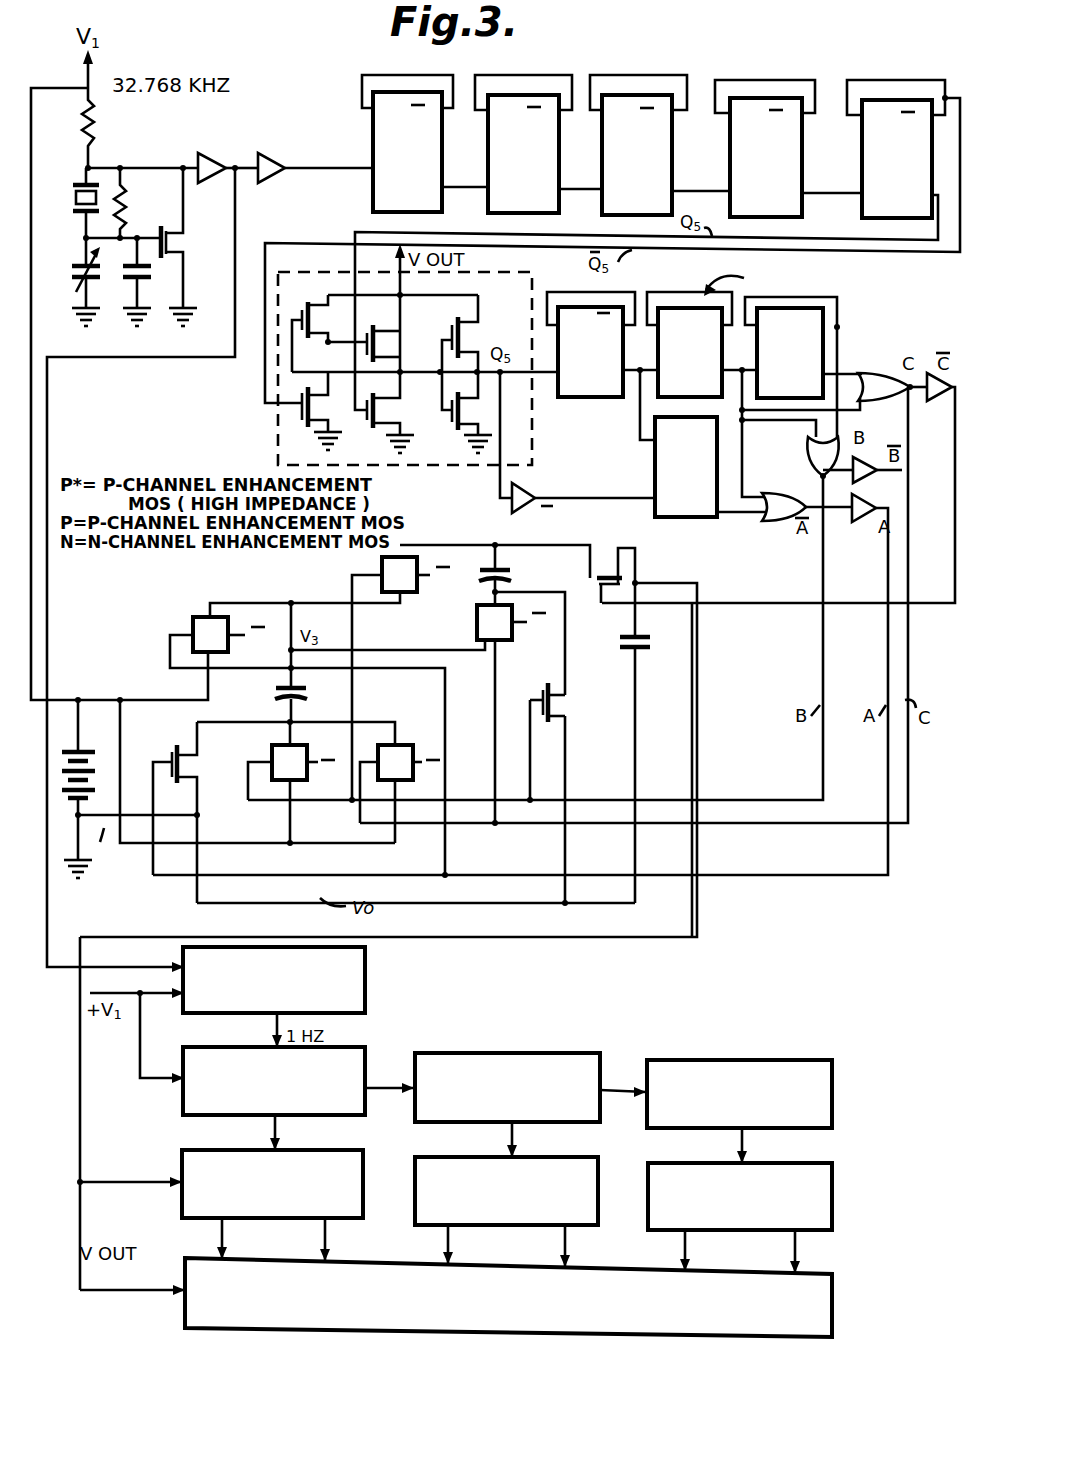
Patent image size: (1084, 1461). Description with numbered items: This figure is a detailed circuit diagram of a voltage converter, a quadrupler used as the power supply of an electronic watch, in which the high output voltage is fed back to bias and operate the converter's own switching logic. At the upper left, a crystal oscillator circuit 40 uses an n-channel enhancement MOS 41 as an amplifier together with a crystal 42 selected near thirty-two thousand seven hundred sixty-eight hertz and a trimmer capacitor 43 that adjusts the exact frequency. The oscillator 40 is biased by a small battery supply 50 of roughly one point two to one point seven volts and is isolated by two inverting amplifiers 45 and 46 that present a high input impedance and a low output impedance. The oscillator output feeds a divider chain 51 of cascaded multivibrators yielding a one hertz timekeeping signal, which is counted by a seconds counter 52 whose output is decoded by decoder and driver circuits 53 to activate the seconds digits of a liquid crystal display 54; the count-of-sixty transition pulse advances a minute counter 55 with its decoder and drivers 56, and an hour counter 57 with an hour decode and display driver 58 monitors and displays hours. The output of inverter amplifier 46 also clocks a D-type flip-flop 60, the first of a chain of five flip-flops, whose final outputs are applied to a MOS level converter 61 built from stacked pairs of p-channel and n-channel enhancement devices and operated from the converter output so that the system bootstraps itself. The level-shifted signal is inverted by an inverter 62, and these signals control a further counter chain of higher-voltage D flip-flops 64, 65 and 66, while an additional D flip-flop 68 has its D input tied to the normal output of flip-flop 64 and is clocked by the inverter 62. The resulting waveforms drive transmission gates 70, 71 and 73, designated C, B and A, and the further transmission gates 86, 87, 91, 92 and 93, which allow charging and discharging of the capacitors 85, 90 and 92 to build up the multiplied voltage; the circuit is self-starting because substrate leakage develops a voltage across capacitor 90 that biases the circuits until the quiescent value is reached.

The crystal oscillator circuit 40 is at (169, 150).
The n-channel enhancement MOS 41 is at (158, 234).
The crystal 42 is at (66, 202).
The capacitor 43 is at (104, 300).
The inverting amplifier 45 is at (215, 162).
The inverting amplifier 46 is at (276, 162).
The battery supply 50 is at (94, 752).
The divider chain 51 is at (365, 986).
The seconds counter 52 is at (366, 1062).
The decoder and driver circuits 53 is at (182, 1165).
The liquid crystal display 54 is at (824, 1286).
The minute counter 55 is at (537, 1046).
The decoder and drivers 56 is at (600, 1172).
The hour counter 57 is at (718, 1060).
The hour decode and display driver 58 is at (834, 1192).
The flip-flop 60 is at (373, 126).
The level converter 61 is at (300, 412).
The inverter 62 is at (532, 492).
The flip-flop 64 is at (596, 398).
The flip-flop 65 is at (682, 308).
The flip-flop 66 is at (825, 358).
The D flip-flop 68 is at (655, 480).
The transmission gate 70 is at (477, 636).
The transmission gate 71 is at (382, 566).
The transmission gate 73 is at (194, 617).
The capacitor 85 is at (272, 692).
The transmission gate 86 is at (172, 752).
The transmission gate 87 is at (272, 752).
The capacitor 90 is at (652, 624).
The transmission gate 91 is at (592, 576).
The capacitor 92 is at (478, 582).
The transmission gate 93 is at (548, 686).